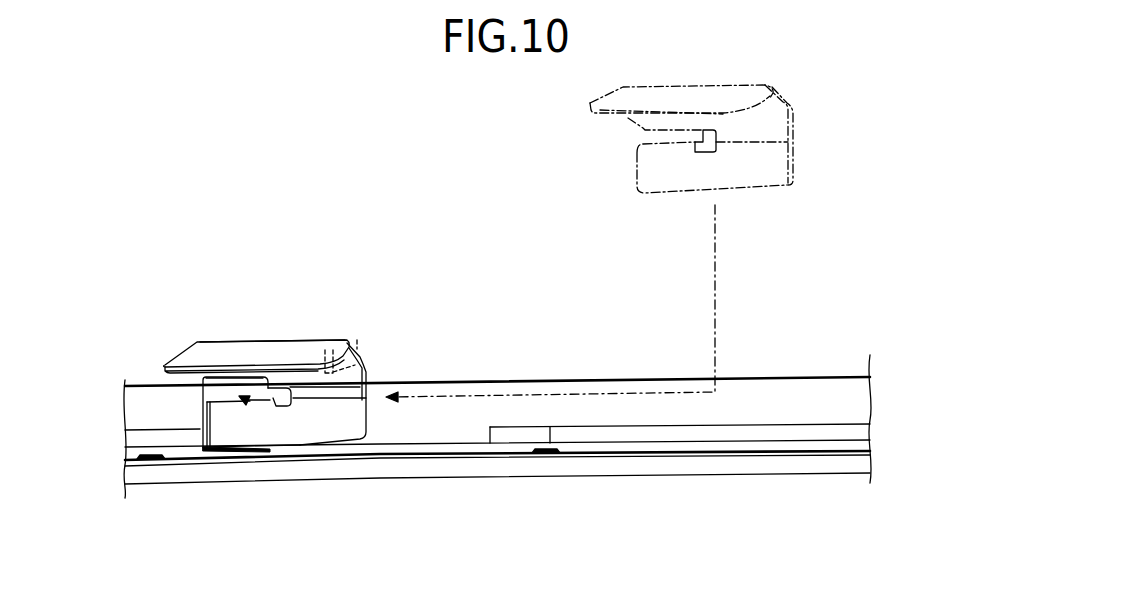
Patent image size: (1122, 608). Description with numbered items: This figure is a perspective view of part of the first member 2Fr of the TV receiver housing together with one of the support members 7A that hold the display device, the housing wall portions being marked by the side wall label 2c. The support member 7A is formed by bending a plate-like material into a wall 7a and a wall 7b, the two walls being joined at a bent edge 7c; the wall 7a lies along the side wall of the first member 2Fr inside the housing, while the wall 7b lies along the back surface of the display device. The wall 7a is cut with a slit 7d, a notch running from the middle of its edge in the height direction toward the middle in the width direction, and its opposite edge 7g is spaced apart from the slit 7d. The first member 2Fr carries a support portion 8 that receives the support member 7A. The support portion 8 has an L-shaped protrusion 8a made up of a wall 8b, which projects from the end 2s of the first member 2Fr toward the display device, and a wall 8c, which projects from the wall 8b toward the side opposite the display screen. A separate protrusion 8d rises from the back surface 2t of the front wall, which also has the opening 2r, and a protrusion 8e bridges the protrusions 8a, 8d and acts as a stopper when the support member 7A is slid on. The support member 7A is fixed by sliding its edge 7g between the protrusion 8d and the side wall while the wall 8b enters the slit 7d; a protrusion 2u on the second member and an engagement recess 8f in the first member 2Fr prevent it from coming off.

The first member 2Fr is at (127, 383).
The end of the first member 2s is at (580, 380).
The rail side wall (2p, 2n1, 2n) 2c is at (787, 388).
The back surface of the wall 2t is at (428, 456).
The opening 2r is at (652, 456).
The protrusion 2u is at (354, 346).
The support member 7A is at (499, 320).
The wall 7a is at (347, 424).
The wall 7b is at (217, 357).
The edge 7c is at (273, 341).
The slit 7d is at (290, 407).
The edge 7g is at (657, 195).
The support portion 8 is at (199, 440).
The protrusion 8a is at (237, 404).
The wall 8b is at (270, 404).
The wall 8c is at (213, 395).
The protrusion 8d is at (220, 452).
The protrusion 8e is at (200, 424).
The engagement portion 8f is at (249, 377).